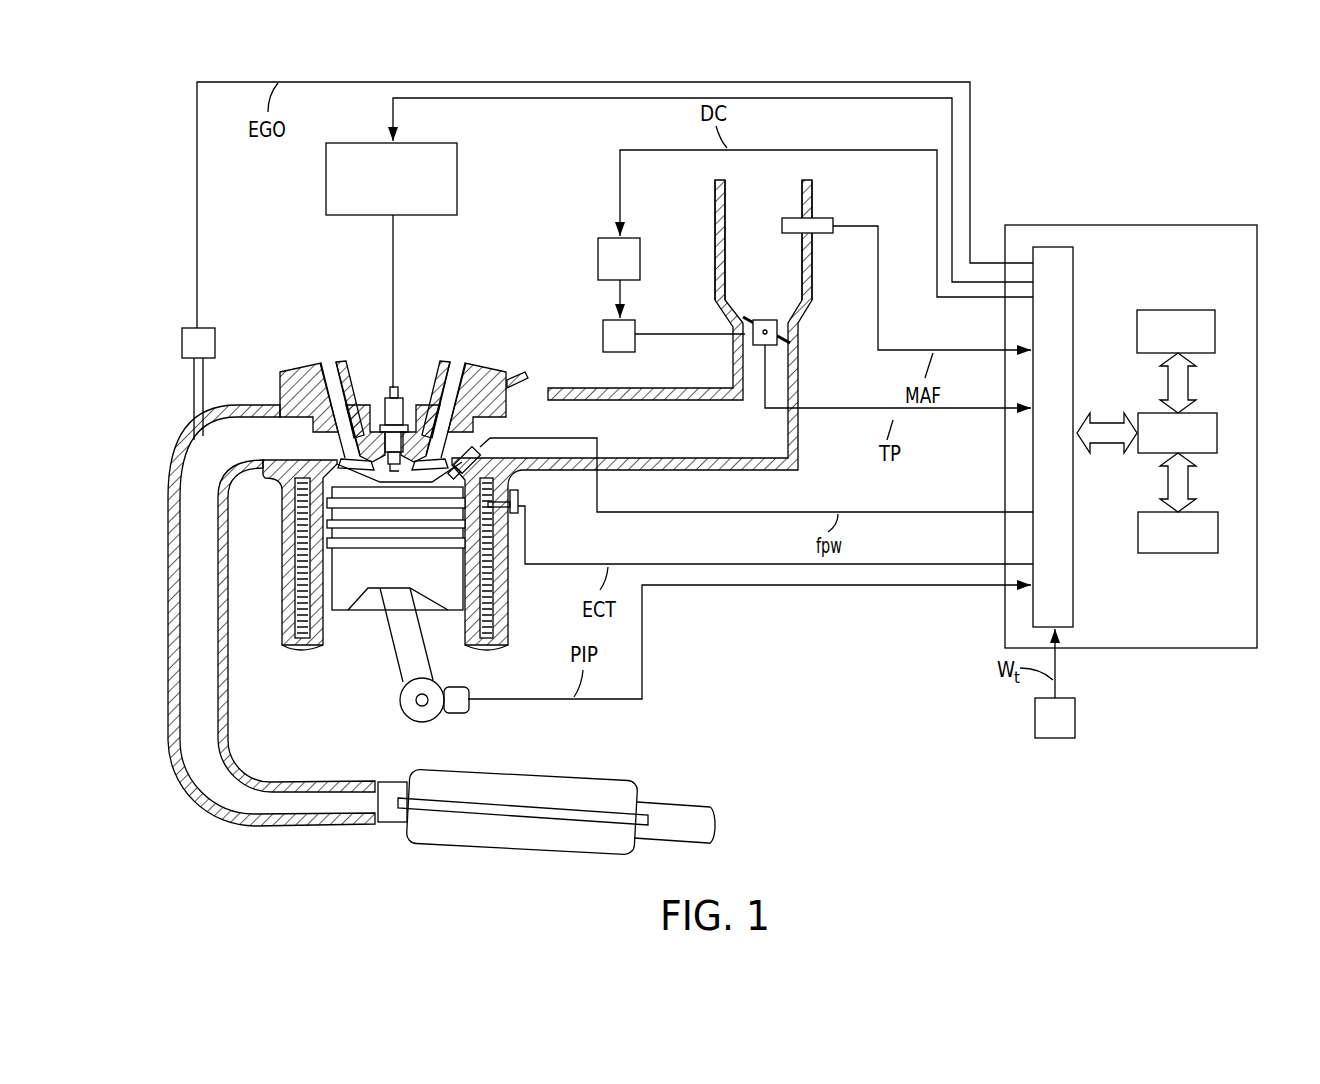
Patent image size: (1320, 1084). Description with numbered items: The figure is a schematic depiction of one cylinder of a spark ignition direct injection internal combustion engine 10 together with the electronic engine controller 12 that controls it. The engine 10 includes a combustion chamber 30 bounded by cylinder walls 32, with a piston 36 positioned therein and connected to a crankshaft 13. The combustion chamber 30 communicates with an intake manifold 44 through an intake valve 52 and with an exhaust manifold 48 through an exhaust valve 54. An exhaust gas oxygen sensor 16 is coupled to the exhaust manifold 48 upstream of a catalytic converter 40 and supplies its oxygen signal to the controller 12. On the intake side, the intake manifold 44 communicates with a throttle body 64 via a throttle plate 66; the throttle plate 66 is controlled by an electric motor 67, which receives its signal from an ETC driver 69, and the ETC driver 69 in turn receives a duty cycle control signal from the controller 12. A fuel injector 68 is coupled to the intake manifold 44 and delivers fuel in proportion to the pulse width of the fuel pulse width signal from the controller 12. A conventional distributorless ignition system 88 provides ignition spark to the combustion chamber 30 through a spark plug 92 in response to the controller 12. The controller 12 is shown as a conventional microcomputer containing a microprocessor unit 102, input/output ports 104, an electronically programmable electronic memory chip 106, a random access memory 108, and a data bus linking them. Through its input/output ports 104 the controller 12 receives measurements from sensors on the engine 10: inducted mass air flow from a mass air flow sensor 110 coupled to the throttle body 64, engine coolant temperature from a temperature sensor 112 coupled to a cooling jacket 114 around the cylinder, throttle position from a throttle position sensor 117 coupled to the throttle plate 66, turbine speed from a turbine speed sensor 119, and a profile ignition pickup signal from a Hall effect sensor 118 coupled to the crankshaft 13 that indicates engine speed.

The engine 10 is at (345, 711).
The electronic engine controller 12 is at (1202, 224).
The crankshaft 13 is at (412, 707).
The exhaust gas oxygen sensor 16 is at (205, 327).
The combustion chamber 30 is at (378, 478).
The cylinder walls 32 is at (322, 646).
The piston 36 is at (394, 578).
The catalytic converter 40 is at (607, 778).
The intake manifold 44 is at (679, 441).
The exhaust manifold 48 is at (185, 512).
The intake valve 52 is at (443, 455).
The exhaust valve 54 is at (342, 455).
The throttle body 64 is at (788, 197).
The throttle plate 66 is at (745, 318).
The electric motor 67 is at (638, 323).
The ETC driver 69 is at (630, 237).
The fuel injector 68 is at (481, 448).
The distributorless ignition system 88 is at (458, 167).
The spark plug 92 is at (400, 393).
The microprocessor unit 102 is at (1205, 413).
The input/output ports 104 is at (1073, 271).
The electronic memory chip 106 is at (1193, 310).
The random access memory 108 is at (1208, 512).
The mass air flow sensor 110 is at (826, 218).
The temperature sensor 112 is at (520, 500).
The cooling jacket 114 is at (487, 595).
The throttle position sensor 117 is at (771, 318).
The Hall effect sensor 118 is at (471, 692).
The turbine speed sensor 119 is at (1076, 718).